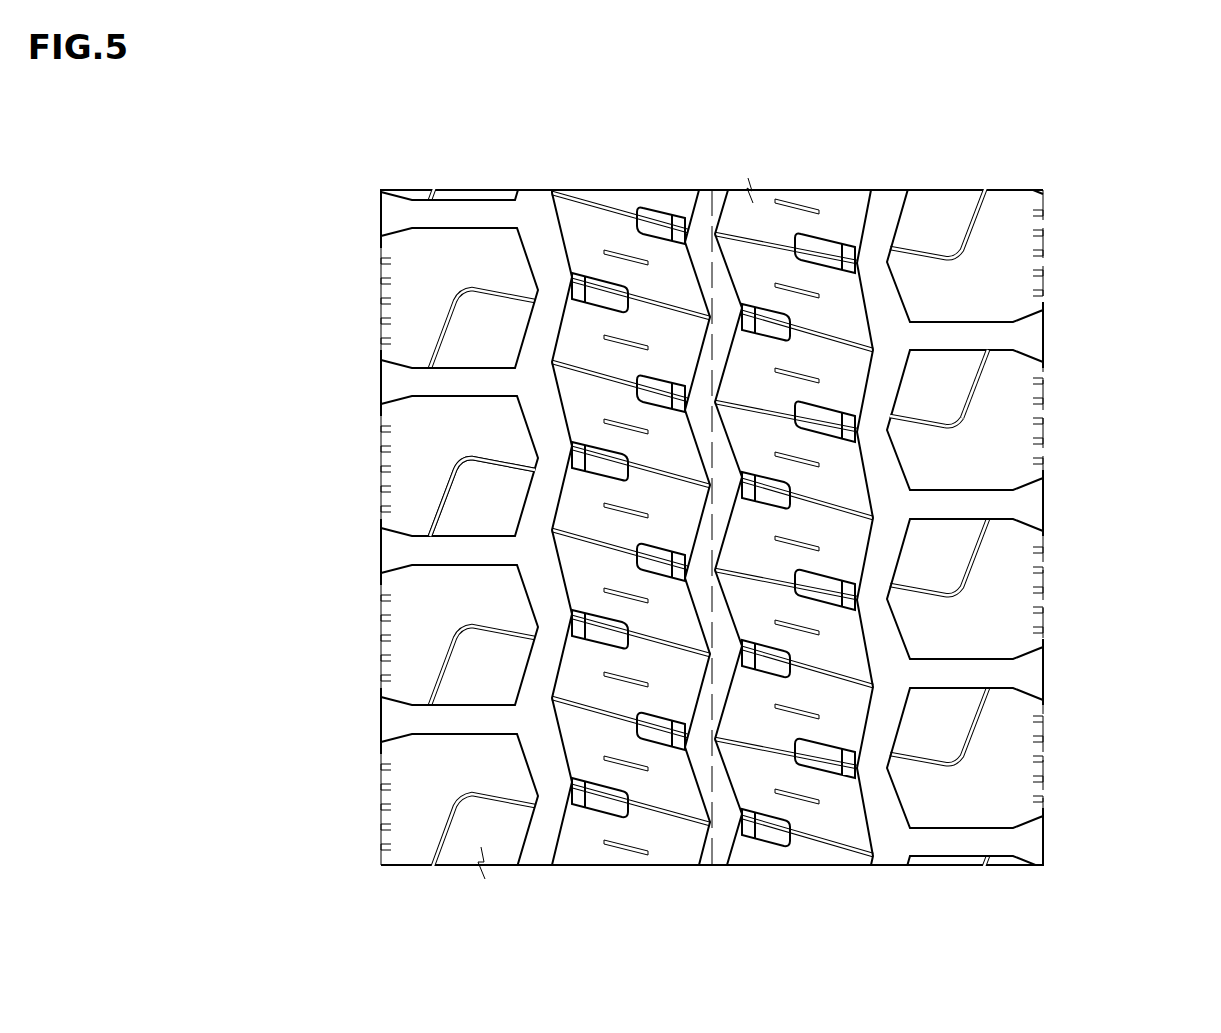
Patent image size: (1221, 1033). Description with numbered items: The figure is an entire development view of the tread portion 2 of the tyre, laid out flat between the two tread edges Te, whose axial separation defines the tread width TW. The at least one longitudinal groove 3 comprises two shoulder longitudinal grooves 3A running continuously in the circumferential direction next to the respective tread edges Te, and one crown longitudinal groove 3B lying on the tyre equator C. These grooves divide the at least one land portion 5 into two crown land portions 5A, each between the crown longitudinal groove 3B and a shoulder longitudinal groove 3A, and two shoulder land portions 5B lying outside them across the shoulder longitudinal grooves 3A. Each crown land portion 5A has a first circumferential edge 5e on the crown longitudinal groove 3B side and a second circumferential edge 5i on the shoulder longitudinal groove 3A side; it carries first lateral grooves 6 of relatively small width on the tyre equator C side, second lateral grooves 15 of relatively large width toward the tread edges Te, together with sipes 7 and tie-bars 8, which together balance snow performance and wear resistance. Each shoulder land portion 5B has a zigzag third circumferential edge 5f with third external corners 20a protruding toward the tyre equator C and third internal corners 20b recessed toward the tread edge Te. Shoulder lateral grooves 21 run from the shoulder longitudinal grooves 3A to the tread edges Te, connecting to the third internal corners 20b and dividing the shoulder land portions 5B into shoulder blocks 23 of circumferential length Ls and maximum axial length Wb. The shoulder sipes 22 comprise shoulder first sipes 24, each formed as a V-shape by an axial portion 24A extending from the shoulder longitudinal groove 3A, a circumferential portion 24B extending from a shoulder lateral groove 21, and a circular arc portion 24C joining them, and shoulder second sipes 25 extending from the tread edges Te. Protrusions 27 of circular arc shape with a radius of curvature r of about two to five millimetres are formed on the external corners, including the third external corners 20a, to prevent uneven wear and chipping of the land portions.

The tread portion 2 is at (1090, 181).
The longitudinal groove 3 is at (727, 841).
The shoulder longitudinal grooves 3A is at (540, 213).
The crown longitudinal groove 3B is at (699, 225).
The land portion 5 is at (628, 841).
The crown land portions 5A is at (600, 224).
The shoulder land portions 5B is at (465, 243).
The first circumferential edge 5e is at (708, 842).
The third circumferential edge 5f is at (898, 800).
The second circumferential edge 5i is at (553, 845).
The first lateral grooves 6 is at (650, 735).
The sipes 7 is at (595, 713).
The tie-bars 8 is at (624, 538).
The second lateral grooves 15 is at (844, 276).
The third external corners 20a is at (862, 748).
The third internal corners 20b is at (905, 848).
The shoulder lateral grooves 21 is at (462, 382).
The shoulder sipes 22 is at (268, 212).
The shoulder blocks 23 is at (420, 650).
The shoulder first sipes 24 is at (452, 317).
The axial portion 24A is at (915, 418).
The circumferential portion 24B is at (972, 400).
The circular arc portion 24C is at (958, 425).
The shoulder second sipes 25 is at (385, 256).
The protrusions 27 is at (540, 460).
The tyre equator C is at (711, 504).
The tread width TW is at (1043, 190).
The length of shoulder blocks Ls is at (552, 705).
The length of shoulder land portions Wb is at (381, 910).
The tread edges Te is at (1086, 868).
The radius of curvature r is at (904, 597).